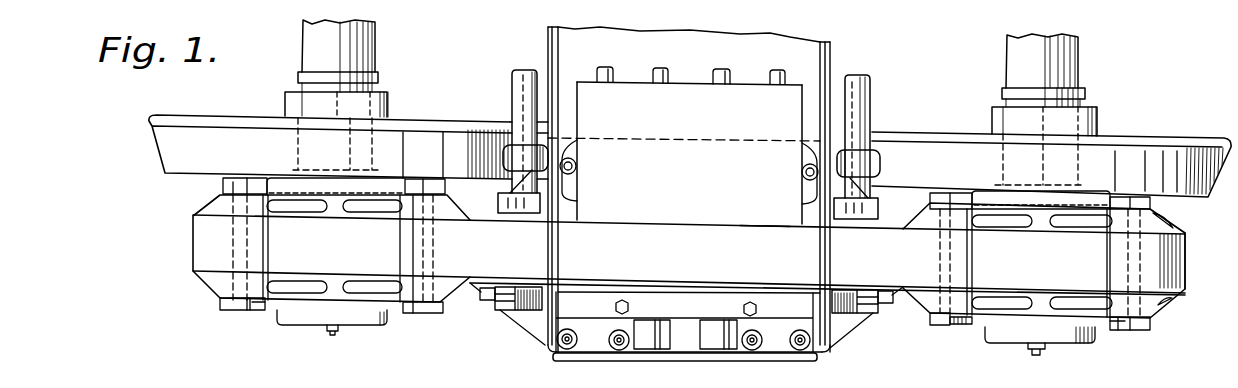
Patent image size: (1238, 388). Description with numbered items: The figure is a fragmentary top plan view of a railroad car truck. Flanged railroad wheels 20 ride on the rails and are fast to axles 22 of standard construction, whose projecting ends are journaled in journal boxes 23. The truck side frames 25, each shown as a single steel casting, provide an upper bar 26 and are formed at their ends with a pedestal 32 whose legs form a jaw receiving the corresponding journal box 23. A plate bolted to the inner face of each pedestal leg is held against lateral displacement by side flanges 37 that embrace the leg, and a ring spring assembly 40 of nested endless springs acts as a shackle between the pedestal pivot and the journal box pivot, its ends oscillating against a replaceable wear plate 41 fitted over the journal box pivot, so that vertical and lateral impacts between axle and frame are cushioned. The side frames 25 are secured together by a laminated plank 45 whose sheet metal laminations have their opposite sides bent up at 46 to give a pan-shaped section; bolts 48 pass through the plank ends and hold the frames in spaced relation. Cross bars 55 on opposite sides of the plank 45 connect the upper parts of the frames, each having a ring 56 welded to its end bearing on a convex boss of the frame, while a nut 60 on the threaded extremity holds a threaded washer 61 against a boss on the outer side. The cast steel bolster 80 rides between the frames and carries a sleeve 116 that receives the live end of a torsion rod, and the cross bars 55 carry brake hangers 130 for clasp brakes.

The flanged railroad wheels 20 is at (690, 156).
The axles 22 is at (375, 33).
The journal boxes 23 is at (370, 309).
The truck side frames 25 is at (689, 255).
The upper bar 26 is at (767, 220).
The pedestal 32 is at (1202, 228).
The side flanges 37 is at (230, 178).
The ring spring assembly 40 is at (262, 318).
The wear plate 41 is at (408, 314).
The plank 45 is at (776, 360).
The bent up sides 46 is at (548, 35).
The bolts 48 is at (577, 167).
The cross bars 55 is at (510, 78).
The ring 56 is at (497, 220).
The nut 60 is at (503, 312).
The threaded washer 61 is at (490, 301).
The bolster 80 is at (684, 125).
The sleeve 116 is at (708, 350).
The brake hangers 130 is at (546, 149).